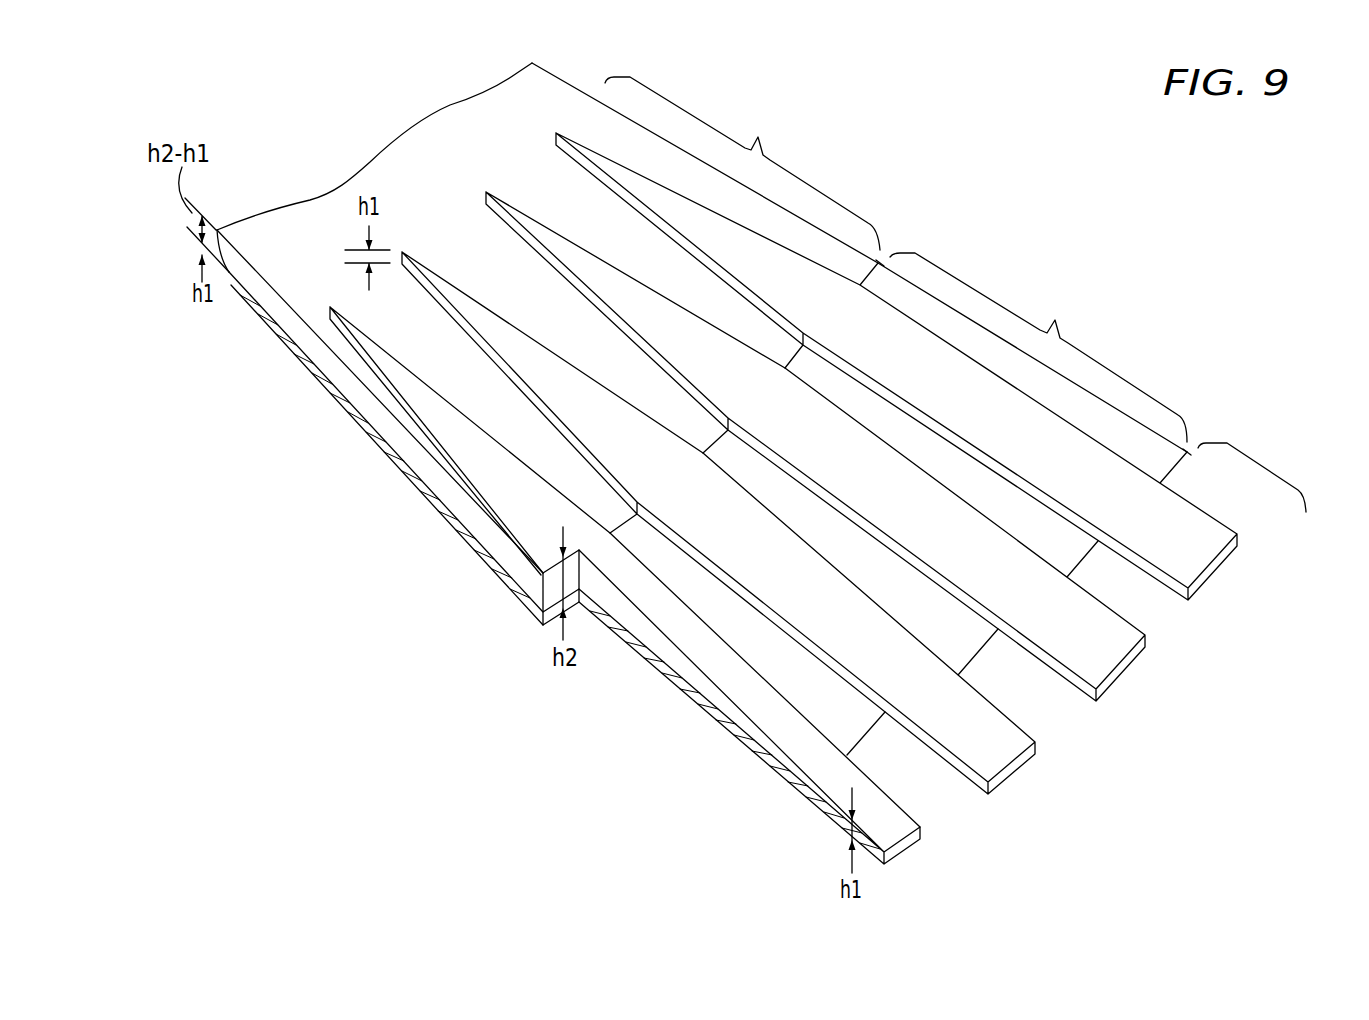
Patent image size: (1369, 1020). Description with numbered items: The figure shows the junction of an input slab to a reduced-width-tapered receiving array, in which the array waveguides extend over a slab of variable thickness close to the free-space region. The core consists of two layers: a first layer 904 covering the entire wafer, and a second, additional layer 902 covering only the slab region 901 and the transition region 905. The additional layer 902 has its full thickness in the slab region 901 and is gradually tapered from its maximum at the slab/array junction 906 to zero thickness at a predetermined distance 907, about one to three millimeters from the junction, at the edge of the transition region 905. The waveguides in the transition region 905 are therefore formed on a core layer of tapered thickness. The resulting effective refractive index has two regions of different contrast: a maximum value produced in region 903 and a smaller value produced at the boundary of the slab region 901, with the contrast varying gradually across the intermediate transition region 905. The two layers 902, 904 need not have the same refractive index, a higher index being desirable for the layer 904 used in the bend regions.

The slab region 901 is at (742, 163).
The tapered additional core layer 902 is at (552, 593).
The region 2 903 is at (1270, 458).
The core layer covering the entire wafer 904 is at (817, 802).
The transition region 905 is at (1038, 345).
The slab/array junction 906 is at (890, 248).
The predetermined distance 907 is at (1197, 438).